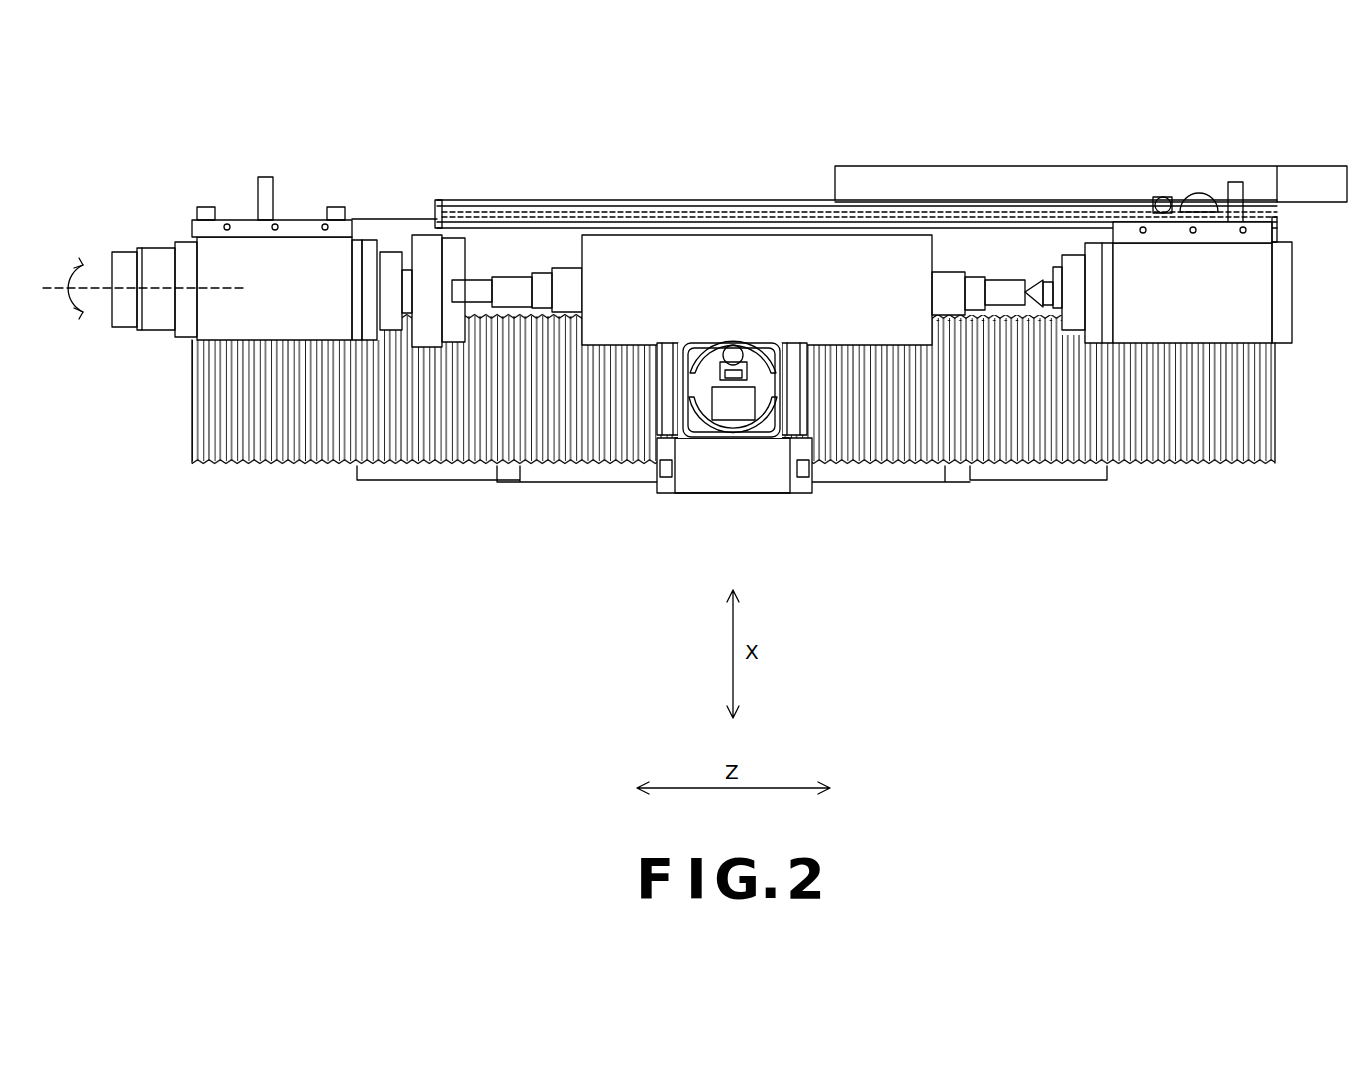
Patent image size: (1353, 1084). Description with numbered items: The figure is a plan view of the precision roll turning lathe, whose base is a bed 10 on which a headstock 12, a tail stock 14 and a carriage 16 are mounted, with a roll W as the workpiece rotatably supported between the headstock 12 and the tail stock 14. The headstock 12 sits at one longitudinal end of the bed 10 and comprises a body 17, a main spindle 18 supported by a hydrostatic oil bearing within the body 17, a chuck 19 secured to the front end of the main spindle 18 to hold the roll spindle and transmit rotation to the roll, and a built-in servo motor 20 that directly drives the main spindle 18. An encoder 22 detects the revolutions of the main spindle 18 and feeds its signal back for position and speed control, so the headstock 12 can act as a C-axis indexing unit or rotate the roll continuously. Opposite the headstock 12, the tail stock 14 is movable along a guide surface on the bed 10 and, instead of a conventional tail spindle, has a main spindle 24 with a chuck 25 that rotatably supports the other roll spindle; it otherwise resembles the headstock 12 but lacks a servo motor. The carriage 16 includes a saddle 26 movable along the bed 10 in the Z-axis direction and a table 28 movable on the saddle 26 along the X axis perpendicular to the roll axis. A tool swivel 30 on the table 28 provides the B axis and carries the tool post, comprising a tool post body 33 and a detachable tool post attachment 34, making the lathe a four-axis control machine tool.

The bed 10 is at (197, 445).
The headstock 12 is at (285, 262).
The tail stock 14 is at (1170, 277).
The carriage 16 is at (729, 434).
The body 17 is at (243, 253).
The main spindle 18 is at (388, 260).
The chuck 19 is at (423, 247).
The servo motor 20 is at (160, 315).
The encoder 22 is at (127, 270).
The main spindle 24 is at (1075, 303).
The chuck 25 is at (1037, 282).
The saddle 26 is at (772, 480).
The table 28 is at (695, 437).
The tool swivel 30 is at (724, 435).
The tool post body 33 is at (758, 380).
The tool post attachment 34 is at (737, 345).